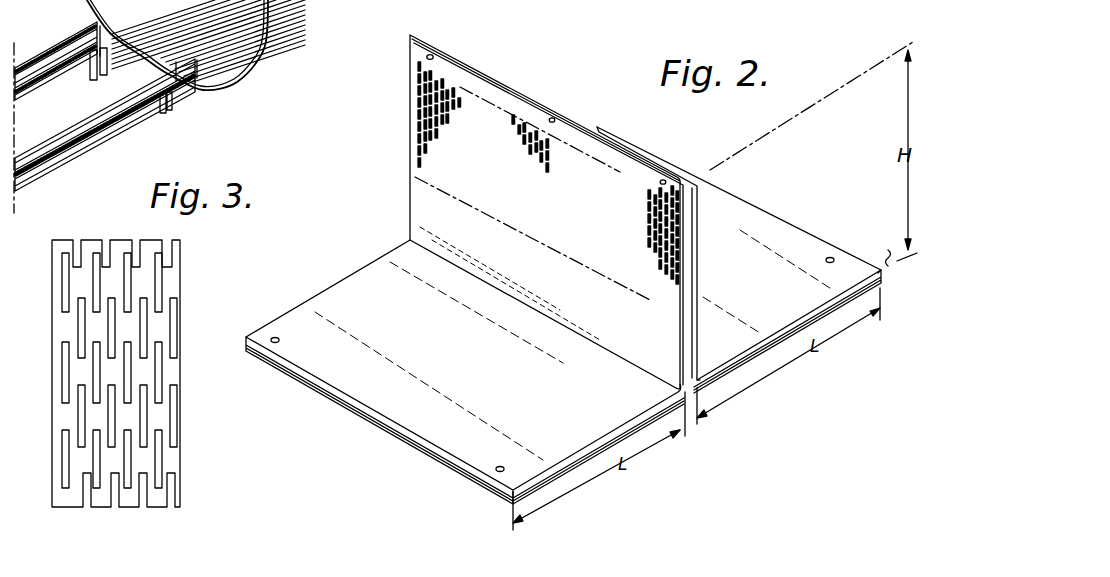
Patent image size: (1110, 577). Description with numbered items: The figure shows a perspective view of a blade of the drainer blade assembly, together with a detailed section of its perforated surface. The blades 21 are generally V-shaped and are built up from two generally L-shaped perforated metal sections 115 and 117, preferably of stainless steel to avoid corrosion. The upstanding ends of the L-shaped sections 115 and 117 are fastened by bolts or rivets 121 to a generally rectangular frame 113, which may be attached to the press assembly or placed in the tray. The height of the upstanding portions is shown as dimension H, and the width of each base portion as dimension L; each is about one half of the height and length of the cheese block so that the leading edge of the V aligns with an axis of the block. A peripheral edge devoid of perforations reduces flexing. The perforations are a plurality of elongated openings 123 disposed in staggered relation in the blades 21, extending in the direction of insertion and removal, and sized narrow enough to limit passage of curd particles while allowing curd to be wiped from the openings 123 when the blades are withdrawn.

In FIG. 2, the blades 21 is at (422, 200).
In FIG. 2, the frame 113 is at (865, 295).
In FIG. 2, the L-shaped section 115 is at (657, 402).
In FIG. 2, the L-shaped section 117 is at (780, 323).
In FIG. 2, the bolts or rivets 121 is at (433, 54).
In FIG. 3, the elongated openings 123 is at (168, 310).
In FIG. 2, the elongated openings 123 is at (420, 108).